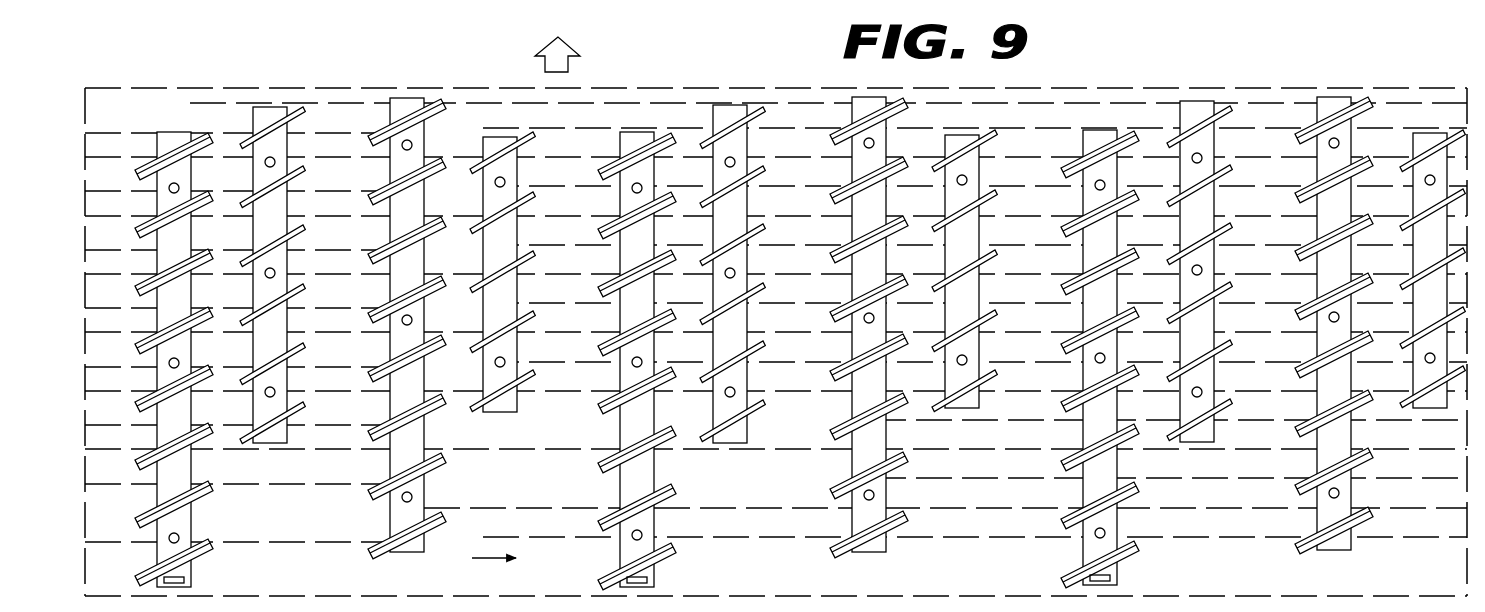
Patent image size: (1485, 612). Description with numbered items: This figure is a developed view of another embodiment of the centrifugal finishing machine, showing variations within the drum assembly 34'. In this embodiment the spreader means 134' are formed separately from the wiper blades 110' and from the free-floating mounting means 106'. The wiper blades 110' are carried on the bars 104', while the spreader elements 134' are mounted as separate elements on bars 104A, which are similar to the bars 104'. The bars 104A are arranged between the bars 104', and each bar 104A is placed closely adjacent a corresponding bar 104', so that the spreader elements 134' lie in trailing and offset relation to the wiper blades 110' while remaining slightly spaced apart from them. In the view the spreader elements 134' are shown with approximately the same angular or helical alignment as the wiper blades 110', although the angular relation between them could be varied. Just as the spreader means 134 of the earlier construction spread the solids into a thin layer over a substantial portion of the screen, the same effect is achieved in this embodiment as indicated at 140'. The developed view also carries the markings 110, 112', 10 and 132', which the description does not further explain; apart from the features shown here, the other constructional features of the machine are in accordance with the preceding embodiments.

The drum assembly 34' is at (776, 305).
The bars 104' is at (743, 313).
The bars 104A is at (264, 107).
The free-floating mounting means 106' is at (754, 343).
The spreader means 134' is at (714, 284).
The spreader means 134 is at (1414, 288).
The end plate 110 is at (686, 569).
The wiper blades 110' is at (729, 165).
The slot 112' is at (696, 341).
The thin layer of solids 140' is at (793, 287).
The section line 10 is at (228, 452).
The direction of travel arrow 132' is at (598, 40).